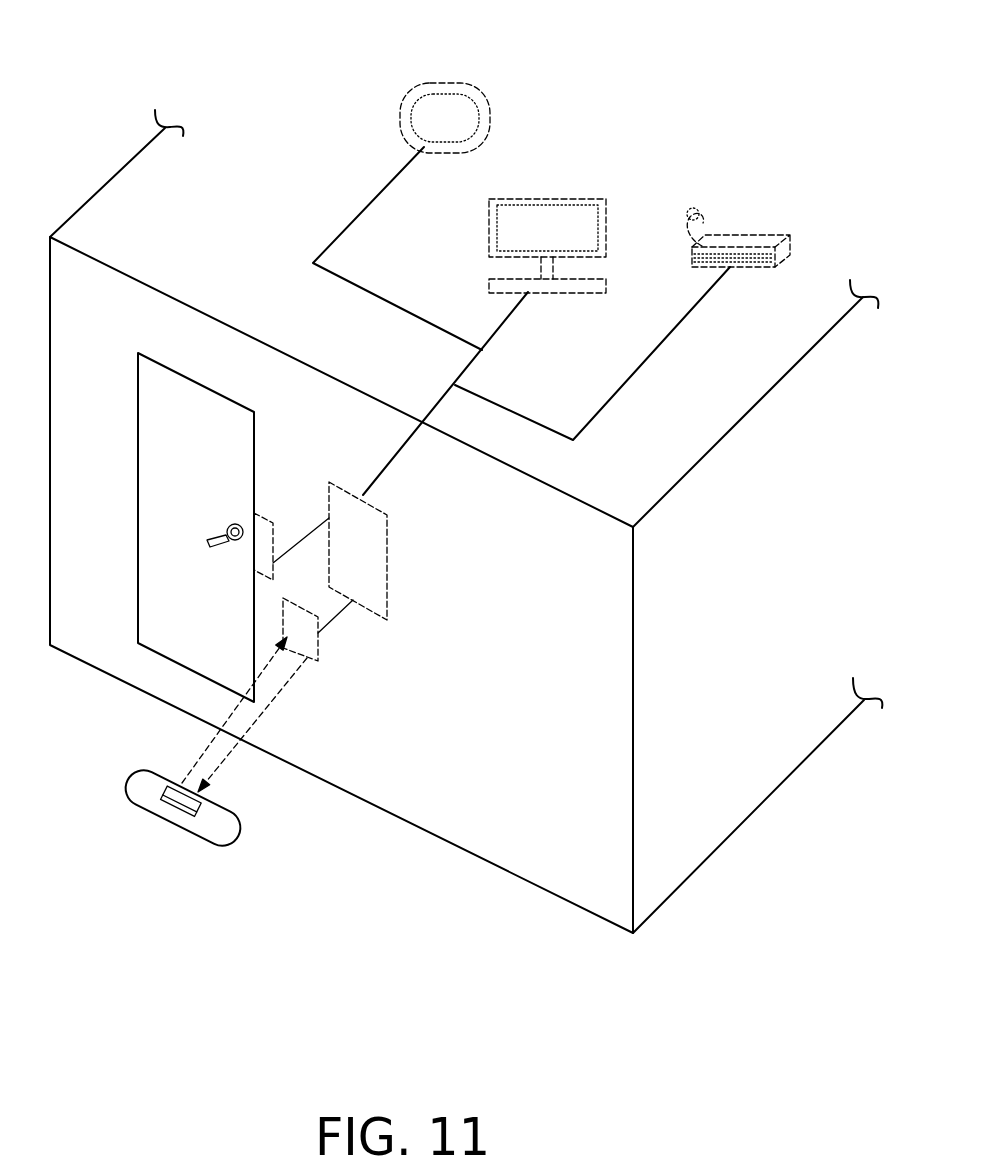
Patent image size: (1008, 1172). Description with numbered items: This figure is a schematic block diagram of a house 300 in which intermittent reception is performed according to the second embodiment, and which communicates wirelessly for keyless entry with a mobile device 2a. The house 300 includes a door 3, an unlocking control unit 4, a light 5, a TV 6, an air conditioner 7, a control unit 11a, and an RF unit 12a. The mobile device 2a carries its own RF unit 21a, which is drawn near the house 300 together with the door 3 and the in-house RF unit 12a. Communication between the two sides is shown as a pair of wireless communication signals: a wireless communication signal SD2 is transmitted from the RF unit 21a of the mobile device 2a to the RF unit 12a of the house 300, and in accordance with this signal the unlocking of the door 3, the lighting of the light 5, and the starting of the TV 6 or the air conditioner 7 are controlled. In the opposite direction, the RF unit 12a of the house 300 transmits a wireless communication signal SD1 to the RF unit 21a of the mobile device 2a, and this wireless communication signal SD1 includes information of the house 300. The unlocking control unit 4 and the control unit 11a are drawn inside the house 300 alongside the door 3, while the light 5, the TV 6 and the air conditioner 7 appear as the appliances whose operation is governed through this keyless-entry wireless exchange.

The house 300 is at (276, 123).
The mobile device 2a is at (133, 803).
The RF unit 21a is at (190, 830).
The door 3 is at (138, 472).
The unlocking control unit 4 is at (265, 516).
The light 5 is at (483, 100).
The TV 6 is at (570, 197).
The air conditioner 7 is at (737, 237).
The control unit 11a is at (388, 560).
The RF unit 12a is at (318, 661).
The wireless communication signal SD1 is at (247, 710).
The wireless communication signal SD2 is at (234, 725).